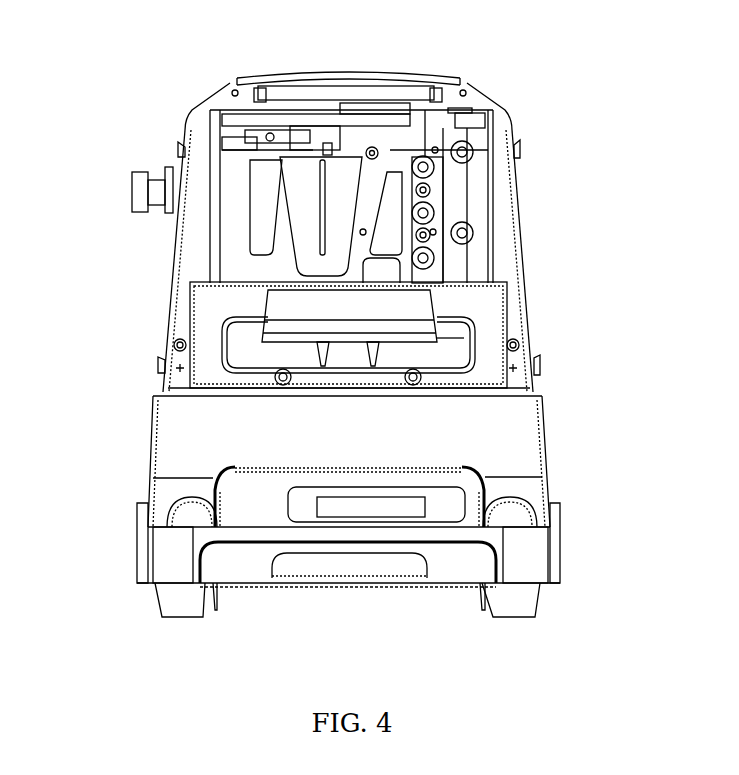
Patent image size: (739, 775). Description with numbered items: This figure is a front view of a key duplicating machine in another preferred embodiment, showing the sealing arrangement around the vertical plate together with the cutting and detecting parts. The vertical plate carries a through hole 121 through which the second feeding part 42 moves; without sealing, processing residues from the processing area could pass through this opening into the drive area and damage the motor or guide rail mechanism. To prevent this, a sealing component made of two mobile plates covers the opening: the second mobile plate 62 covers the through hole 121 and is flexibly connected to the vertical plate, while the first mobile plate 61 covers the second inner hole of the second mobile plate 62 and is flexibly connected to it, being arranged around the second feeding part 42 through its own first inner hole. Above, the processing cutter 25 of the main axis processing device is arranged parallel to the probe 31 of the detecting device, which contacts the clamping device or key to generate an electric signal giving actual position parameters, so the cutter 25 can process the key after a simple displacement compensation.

The processing cutter 25 is at (373, 368).
The probe 31 is at (322, 362).
The through hole 121 is at (230, 465).
The second mobile plate 62 is at (248, 508).
The first mobile plate 61 is at (432, 503).
The second feeding part 42 is at (412, 510).